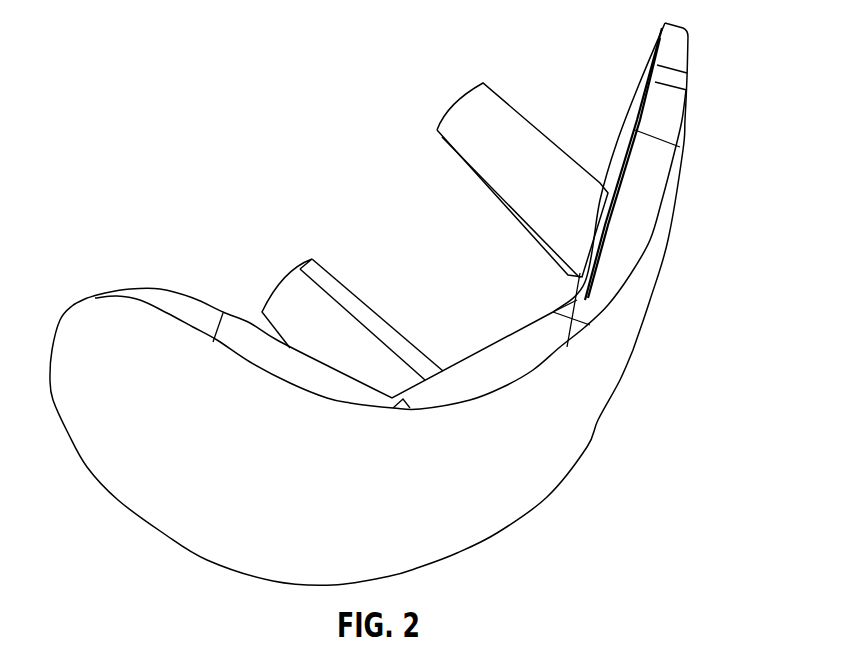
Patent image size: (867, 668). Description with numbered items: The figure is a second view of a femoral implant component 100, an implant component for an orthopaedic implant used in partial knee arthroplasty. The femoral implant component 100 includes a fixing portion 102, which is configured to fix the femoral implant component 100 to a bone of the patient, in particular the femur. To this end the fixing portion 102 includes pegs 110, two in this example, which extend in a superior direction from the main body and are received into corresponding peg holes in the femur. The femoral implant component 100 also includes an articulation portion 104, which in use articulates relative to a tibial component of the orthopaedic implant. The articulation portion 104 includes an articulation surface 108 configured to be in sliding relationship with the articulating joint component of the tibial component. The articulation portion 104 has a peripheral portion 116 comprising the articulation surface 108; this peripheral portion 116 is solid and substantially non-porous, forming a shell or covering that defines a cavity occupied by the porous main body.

The femoral implant component 100 is at (219, 166).
The fixing portion 102 is at (247, 251).
The articulation portion 104 is at (600, 470).
The articulation surface 108 is at (328, 498).
The pegs 110 is at (297, 288).
The peripheral portion 116 is at (643, 175).